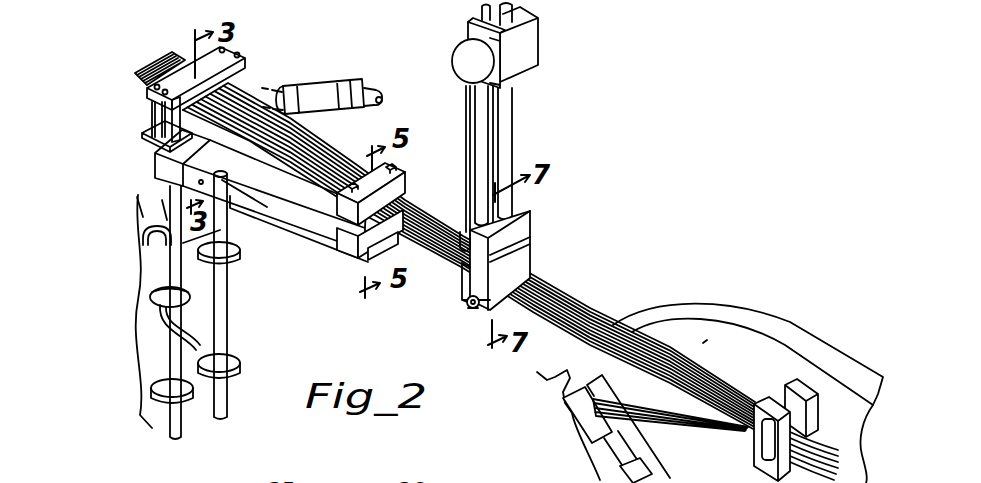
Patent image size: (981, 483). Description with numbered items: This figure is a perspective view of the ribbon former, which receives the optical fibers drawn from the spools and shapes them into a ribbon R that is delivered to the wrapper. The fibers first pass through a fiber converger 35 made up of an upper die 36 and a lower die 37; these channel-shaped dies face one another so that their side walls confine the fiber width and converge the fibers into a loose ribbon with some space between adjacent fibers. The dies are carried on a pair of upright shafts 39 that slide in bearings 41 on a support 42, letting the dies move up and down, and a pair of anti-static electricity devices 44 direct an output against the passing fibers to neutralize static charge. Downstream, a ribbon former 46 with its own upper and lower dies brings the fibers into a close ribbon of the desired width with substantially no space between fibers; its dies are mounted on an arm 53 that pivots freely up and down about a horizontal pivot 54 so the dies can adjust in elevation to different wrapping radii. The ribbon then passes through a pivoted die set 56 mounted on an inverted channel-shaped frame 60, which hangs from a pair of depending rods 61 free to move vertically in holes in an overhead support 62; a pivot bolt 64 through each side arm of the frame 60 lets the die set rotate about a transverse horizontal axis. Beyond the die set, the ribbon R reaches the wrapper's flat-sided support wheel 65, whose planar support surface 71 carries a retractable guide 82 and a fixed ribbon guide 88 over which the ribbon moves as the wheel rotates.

The fiber converger 35 is at (247, 40).
The upper die 36 is at (238, 70).
The lower die 37 is at (330, 93).
The anti-static electricity devices 44 is at (352, 83).
The bearings 41 is at (141, 231).
The upright shafts 39 is at (228, 310).
The support 42 is at (207, 320).
The horizontal pivot 54 is at (231, 176).
The arm 53 is at (327, 240).
The ribbon former 46 is at (419, 178).
The ribbon R is at (560, 297).
The depending rods 61 is at (508, 113).
The overhead support 62 is at (525, 60).
The pivoted die set 56 is at (537, 247).
The inverted channel-shaped frame 60 is at (532, 235).
The pivot bolt 64 is at (465, 304).
The support wheel 65 is at (757, 313).
The planar support surface 71 is at (703, 343).
The fixed ribbon guide 88 is at (826, 412).
The retractable guide 82 is at (573, 420).